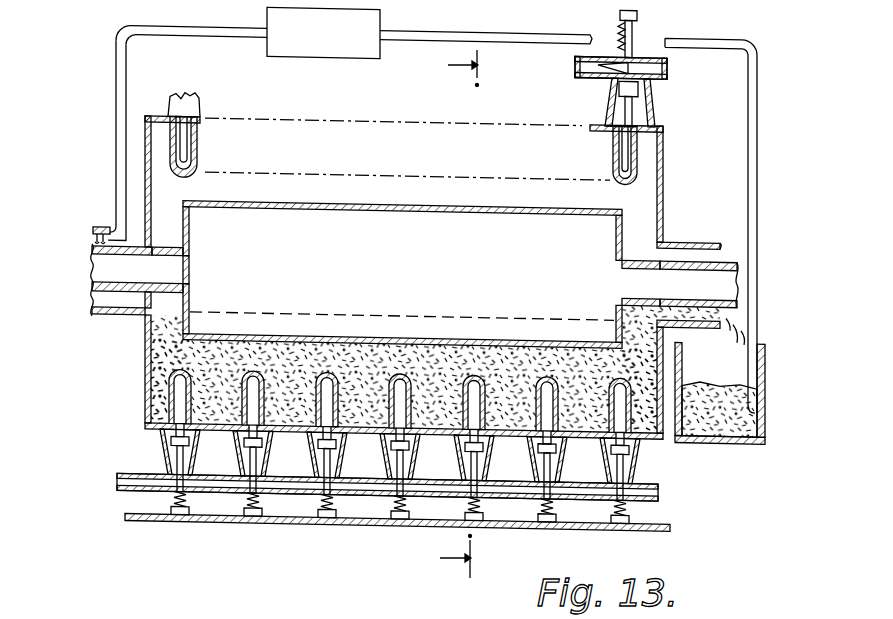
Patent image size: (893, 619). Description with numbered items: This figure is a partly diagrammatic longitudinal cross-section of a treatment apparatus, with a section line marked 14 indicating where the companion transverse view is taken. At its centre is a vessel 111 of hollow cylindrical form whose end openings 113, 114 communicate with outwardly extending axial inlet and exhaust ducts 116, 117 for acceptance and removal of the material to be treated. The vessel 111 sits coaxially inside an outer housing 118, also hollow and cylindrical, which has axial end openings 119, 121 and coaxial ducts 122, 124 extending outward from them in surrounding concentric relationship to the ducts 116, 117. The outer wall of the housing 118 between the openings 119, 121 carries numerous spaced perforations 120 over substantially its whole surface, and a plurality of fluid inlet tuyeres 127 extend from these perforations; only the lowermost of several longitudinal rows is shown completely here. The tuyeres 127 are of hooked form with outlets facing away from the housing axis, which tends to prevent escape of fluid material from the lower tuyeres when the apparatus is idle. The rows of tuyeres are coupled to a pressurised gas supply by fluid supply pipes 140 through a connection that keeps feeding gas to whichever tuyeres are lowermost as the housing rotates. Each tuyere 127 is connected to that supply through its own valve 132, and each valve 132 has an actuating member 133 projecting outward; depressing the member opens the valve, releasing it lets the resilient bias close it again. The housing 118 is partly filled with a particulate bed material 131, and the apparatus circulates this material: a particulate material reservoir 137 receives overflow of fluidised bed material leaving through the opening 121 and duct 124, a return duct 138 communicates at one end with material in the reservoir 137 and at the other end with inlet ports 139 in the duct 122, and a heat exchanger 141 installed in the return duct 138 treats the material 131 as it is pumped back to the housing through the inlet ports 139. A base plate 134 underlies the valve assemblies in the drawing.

The section line 14- 14 is at (442, 314).
The vessel 111 is at (366, 200).
The end opening 113 is at (177, 278).
The end opening 114 is at (620, 284).
The inlet duct 116 is at (187, 248).
The exhaust duct 117 is at (624, 262).
The outer housing 118 is at (203, 118).
The axial end opening 119 is at (140, 241).
The perforations 120 is at (186, 126).
The axial end opening 121 is at (666, 251).
The coaxial duct 122 is at (100, 228).
The coaxial duct 124 is at (688, 243).
The fluid inlet tuyeres 127 is at (614, 152).
The particulate bed material 131 is at (636, 368).
The valve 132 is at (240, 460).
The actuating member 133 is at (615, 70).
The base plate 134 is at (660, 528).
The particulate material reservoir 137 is at (712, 440).
The return duct 138 is at (127, 63).
The inlet ports 139 is at (113, 255).
The fluid supply pipes 140 is at (660, 494).
The heat exchanger 141 is at (337, 58).